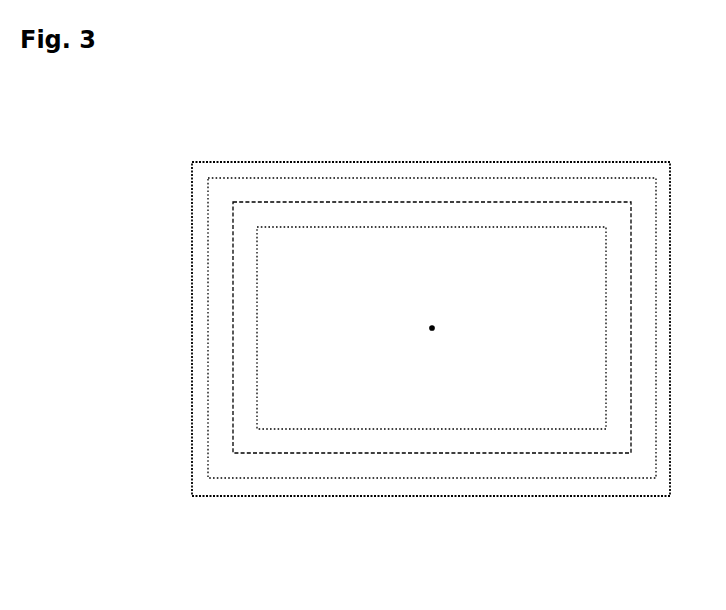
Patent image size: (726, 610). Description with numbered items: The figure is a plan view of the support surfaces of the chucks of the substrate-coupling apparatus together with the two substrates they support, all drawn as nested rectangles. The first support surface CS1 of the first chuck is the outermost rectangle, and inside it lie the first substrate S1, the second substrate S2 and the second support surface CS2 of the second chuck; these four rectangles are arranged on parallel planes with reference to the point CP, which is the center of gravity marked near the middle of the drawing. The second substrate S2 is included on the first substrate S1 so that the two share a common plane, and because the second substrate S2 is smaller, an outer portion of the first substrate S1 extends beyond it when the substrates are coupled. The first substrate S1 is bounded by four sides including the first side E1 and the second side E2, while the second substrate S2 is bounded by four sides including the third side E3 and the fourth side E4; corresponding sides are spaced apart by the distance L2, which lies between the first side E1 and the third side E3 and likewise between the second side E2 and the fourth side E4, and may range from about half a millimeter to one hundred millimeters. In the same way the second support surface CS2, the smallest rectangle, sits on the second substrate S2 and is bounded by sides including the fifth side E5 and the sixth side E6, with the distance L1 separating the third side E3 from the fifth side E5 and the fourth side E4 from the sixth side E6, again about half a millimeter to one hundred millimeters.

The first support surface CS1 is at (606, 161).
The second support surface CS2 is at (119, 355).
The first substrate S1 is at (119, 450).
The second substrate S2 is at (315, 548).
The first side E1 is at (207, 454).
The second side E2 is at (238, 478).
The third side E3 is at (232, 436).
The fourth side E4 is at (305, 453).
The fifth side E5 is at (257, 364).
The sixth side E6 is at (295, 429).
The center of gravity point CP is at (434, 328).
The distance between second substrate side and second support surface side L1 is at (432, 478).
The distance between first substrate side and second substrate side L2 is at (257, 328).